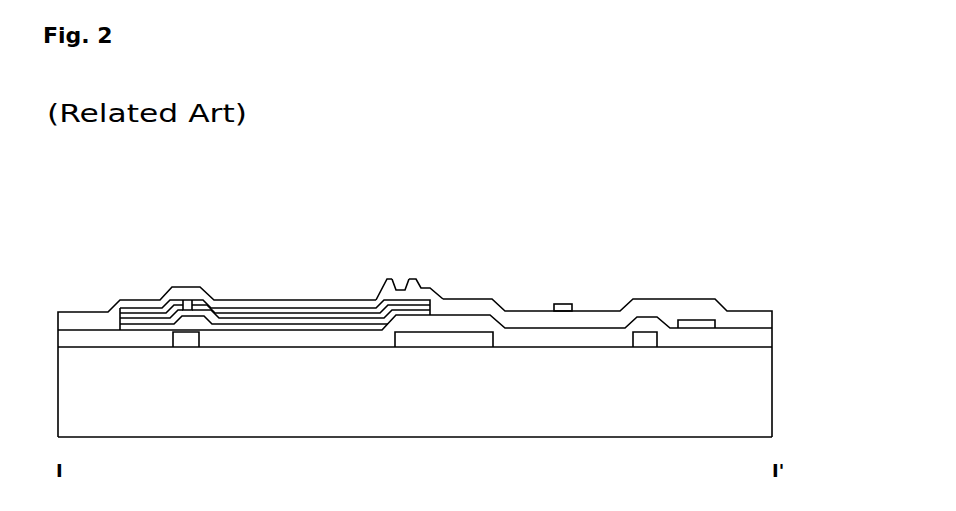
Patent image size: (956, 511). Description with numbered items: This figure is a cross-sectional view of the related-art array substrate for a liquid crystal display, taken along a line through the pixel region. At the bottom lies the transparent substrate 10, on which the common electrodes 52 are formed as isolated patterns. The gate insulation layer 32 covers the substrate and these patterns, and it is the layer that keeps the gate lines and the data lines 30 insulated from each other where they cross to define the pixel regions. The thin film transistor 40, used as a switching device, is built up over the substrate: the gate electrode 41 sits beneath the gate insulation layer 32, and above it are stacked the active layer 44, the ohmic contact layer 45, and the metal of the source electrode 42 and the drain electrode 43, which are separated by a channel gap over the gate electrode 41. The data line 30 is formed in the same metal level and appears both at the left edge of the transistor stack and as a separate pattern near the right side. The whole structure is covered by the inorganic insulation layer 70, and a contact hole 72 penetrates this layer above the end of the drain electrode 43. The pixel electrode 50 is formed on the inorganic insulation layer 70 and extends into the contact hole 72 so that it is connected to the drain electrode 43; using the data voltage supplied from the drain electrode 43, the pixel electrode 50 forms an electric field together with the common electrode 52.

The transparent substrate 10 is at (765, 397).
The data line 30 is at (133, 303).
The gate insulation layer 32 is at (765, 340).
The thin film transistor 40 is at (188, 372).
The gate electrode 41 is at (212, 300).
The source electrode 42 is at (172, 300).
The drain electrode 43 is at (200, 300).
The active layer 44 is at (139, 326).
The ohmic contact layer 45 is at (227, 323).
The pixel electrode 50 is at (414, 282).
The common electrode 52 is at (443, 337).
The inorganic insulation layer 70 is at (765, 320).
The contact hole 72 is at (401, 266).